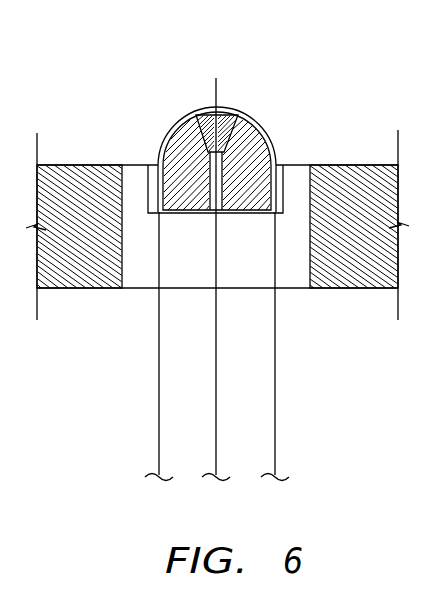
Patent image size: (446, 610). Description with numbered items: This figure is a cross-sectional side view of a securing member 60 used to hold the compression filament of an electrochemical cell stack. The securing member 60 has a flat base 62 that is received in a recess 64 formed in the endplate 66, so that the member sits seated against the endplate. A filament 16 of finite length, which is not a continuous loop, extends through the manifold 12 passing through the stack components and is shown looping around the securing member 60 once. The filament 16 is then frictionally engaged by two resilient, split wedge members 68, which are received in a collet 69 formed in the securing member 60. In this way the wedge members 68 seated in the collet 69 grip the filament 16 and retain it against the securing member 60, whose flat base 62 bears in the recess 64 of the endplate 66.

The securing member 60 is at (317, 120).
The manifold 12 is at (122, 291).
The endplate 66 is at (82, 164).
The recess 64 is at (147, 181).
The flat base 62 is at (193, 214).
The split wedge member 68 is at (198, 116).
The collet 69 is at (233, 117).
The filament 16 is at (216, 78).